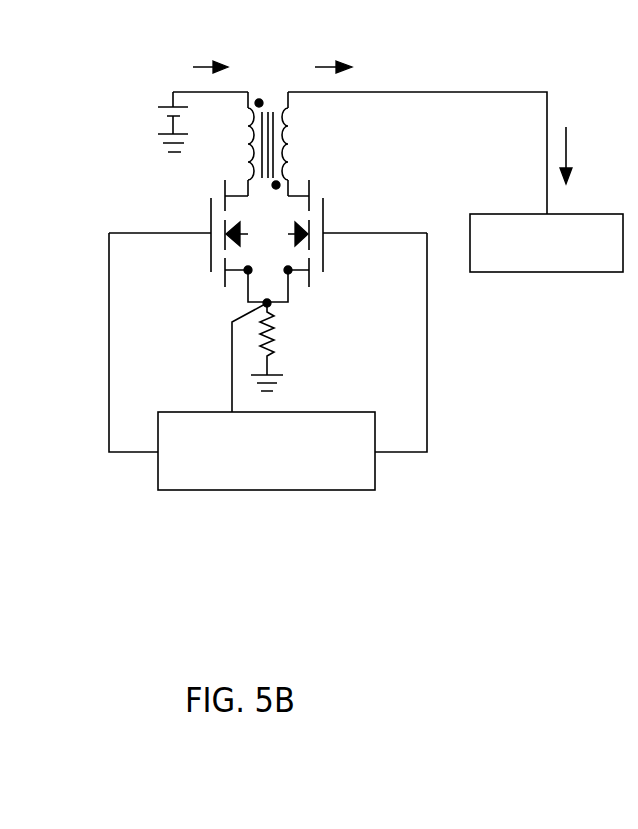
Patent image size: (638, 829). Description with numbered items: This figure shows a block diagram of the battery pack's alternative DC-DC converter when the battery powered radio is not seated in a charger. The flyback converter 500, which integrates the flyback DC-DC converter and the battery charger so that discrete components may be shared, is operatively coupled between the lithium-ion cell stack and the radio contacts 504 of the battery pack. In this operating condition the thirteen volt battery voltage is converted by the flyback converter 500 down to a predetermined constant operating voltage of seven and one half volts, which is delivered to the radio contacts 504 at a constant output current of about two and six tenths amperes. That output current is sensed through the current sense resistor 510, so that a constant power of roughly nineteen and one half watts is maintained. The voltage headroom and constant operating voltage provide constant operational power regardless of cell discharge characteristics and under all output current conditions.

The flyback converter 500 is at (314, 353).
The radio contacts 504 is at (546, 272).
The current sense resistor 510 is at (318, 343).